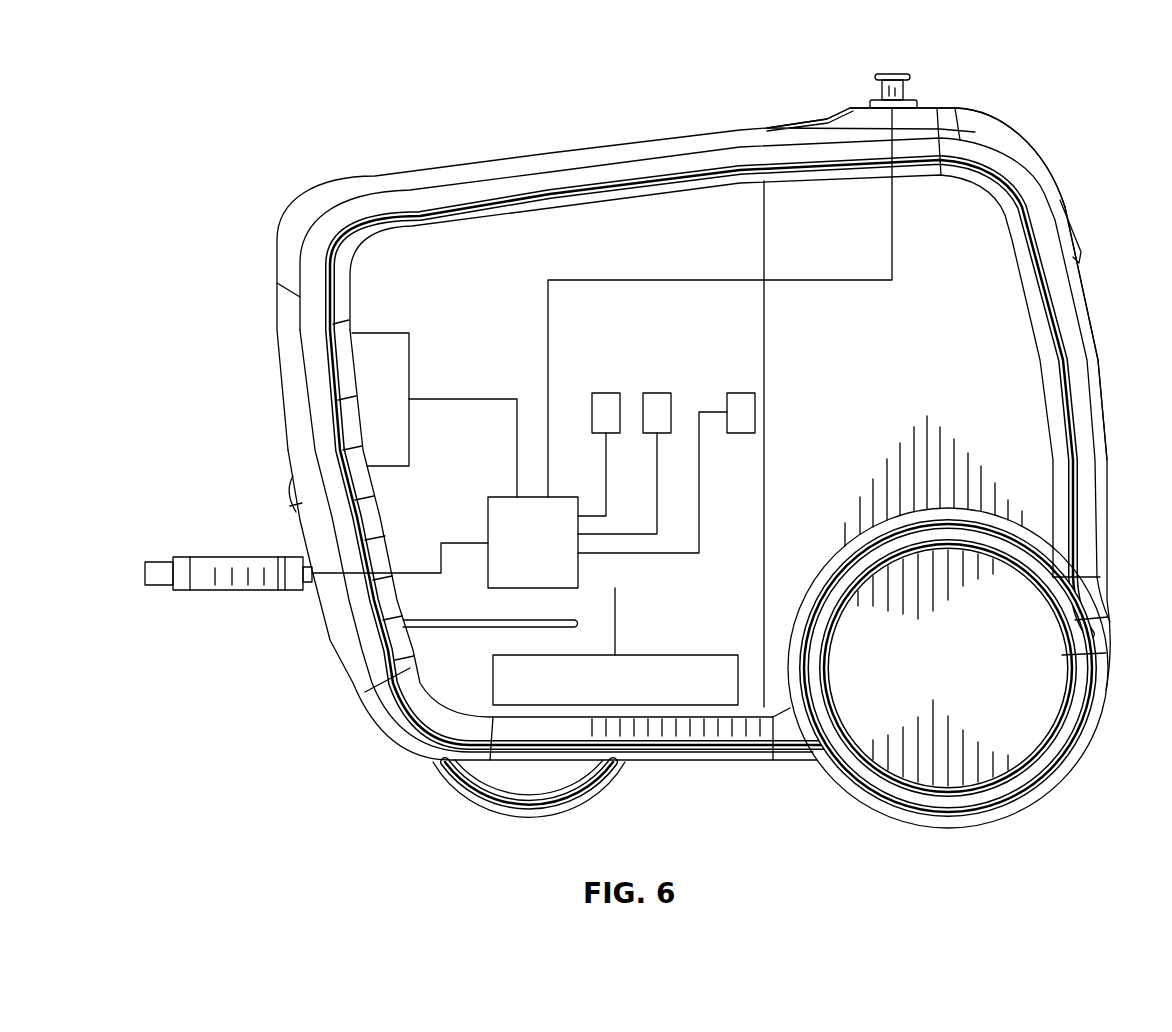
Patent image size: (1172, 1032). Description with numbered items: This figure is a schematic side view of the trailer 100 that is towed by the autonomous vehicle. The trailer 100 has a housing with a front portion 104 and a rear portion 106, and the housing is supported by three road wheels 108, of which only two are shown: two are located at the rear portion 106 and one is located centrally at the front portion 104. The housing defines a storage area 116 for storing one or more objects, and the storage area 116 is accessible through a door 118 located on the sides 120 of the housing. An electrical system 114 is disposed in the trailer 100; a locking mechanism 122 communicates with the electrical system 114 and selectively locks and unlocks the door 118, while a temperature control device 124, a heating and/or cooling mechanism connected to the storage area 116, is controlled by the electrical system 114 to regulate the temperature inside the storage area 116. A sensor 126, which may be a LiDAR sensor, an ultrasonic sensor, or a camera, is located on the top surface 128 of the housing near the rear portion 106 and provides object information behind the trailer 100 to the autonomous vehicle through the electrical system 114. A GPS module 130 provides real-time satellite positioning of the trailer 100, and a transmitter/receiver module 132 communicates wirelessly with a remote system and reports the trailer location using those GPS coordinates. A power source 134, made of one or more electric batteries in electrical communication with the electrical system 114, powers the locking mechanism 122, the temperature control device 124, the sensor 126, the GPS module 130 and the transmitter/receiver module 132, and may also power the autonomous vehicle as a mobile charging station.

The trailer 100 is at (222, 75).
The front portion 104 is at (290, 225).
The rear portion 106 is at (1090, 302).
The road wheels 108 is at (607, 788).
The electrical system 114 is at (556, 556).
The storage area 116 is at (535, 215).
The door 118 is at (662, 222).
The sides 120 is at (223, 558).
The locking mechanism 122 is at (757, 412).
The temperature control device 124 is at (405, 374).
The sensor 126 is at (893, 76).
The top surface 128 is at (975, 110).
The GPS module 130 is at (606, 392).
The transmitter/receiver module 132 is at (660, 392).
The power source 134 is at (639, 690).